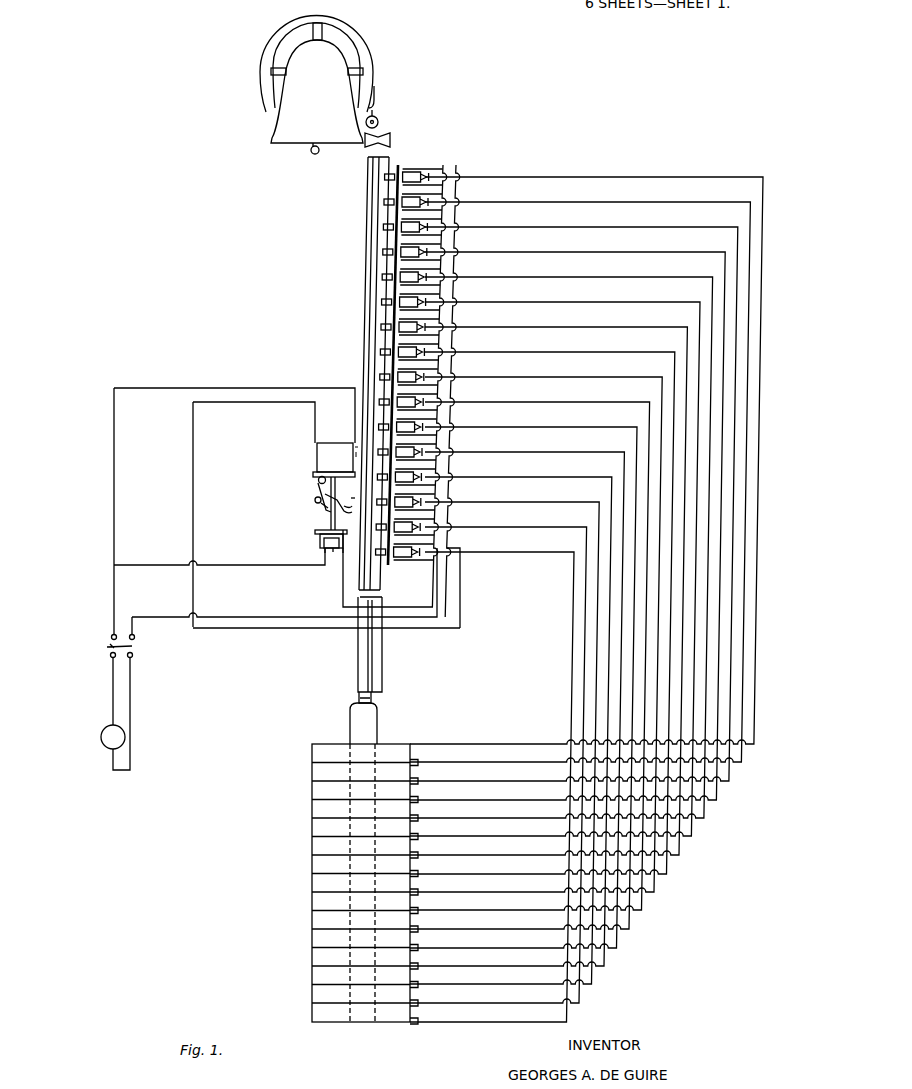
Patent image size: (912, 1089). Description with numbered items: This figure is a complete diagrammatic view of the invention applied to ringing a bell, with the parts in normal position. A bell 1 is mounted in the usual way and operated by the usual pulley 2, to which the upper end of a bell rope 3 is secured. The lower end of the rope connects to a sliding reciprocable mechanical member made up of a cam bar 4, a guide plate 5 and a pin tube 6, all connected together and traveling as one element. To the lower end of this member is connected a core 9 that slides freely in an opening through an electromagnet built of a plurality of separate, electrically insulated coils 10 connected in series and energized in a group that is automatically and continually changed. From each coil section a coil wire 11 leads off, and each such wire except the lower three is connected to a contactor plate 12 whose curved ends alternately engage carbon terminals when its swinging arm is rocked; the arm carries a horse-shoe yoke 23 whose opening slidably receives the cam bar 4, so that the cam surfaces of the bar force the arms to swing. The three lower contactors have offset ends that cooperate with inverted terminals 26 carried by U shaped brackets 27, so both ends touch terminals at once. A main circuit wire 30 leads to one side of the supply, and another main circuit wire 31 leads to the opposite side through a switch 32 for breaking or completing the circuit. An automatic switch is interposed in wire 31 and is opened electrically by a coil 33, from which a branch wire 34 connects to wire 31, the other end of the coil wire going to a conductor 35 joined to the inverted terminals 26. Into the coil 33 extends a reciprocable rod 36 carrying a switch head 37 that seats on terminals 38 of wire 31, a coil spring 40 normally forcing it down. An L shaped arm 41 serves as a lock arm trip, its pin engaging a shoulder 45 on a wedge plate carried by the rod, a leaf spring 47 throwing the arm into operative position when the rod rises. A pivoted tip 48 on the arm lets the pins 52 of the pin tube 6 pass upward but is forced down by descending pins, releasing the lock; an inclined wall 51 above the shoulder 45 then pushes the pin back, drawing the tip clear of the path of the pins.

The bell 1 is at (283, 120).
The pulley 2 is at (368, 40).
The bell rope 3 is at (377, 95).
The cam bar 4 is at (383, 272).
The guide plate 5 is at (368, 247).
The pin tube 6 is at (368, 219).
The core 9 is at (378, 726).
The coils 10 is at (312, 790).
The coil wire 11 is at (595, 228).
The contactor plate 12 is at (422, 172).
The horse-shoe yoke 23 is at (368, 203).
The terminals 26 is at (420, 505).
The U shaped brackets 27 is at (418, 562).
The main circuit wire 30 is at (284, 582).
The main circuit wire 31 is at (114, 604).
The switch 32 is at (112, 648).
The coil 33 is at (317, 458).
The branch wire 34 is at (114, 538).
The conductor 35 is at (300, 630).
The reciprocable rod 36 is at (332, 522).
The switch head 37 is at (338, 548).
The terminals 38 is at (325, 545).
The coil spring 40 is at (322, 540).
The L shaped arm 41 is at (315, 495).
The shoulder 45 is at (322, 508).
The leaf spring 47 is at (316, 483).
The tip 48 is at (355, 507).
The inclined wall 51 is at (318, 506).
The pins 52 is at (352, 489).